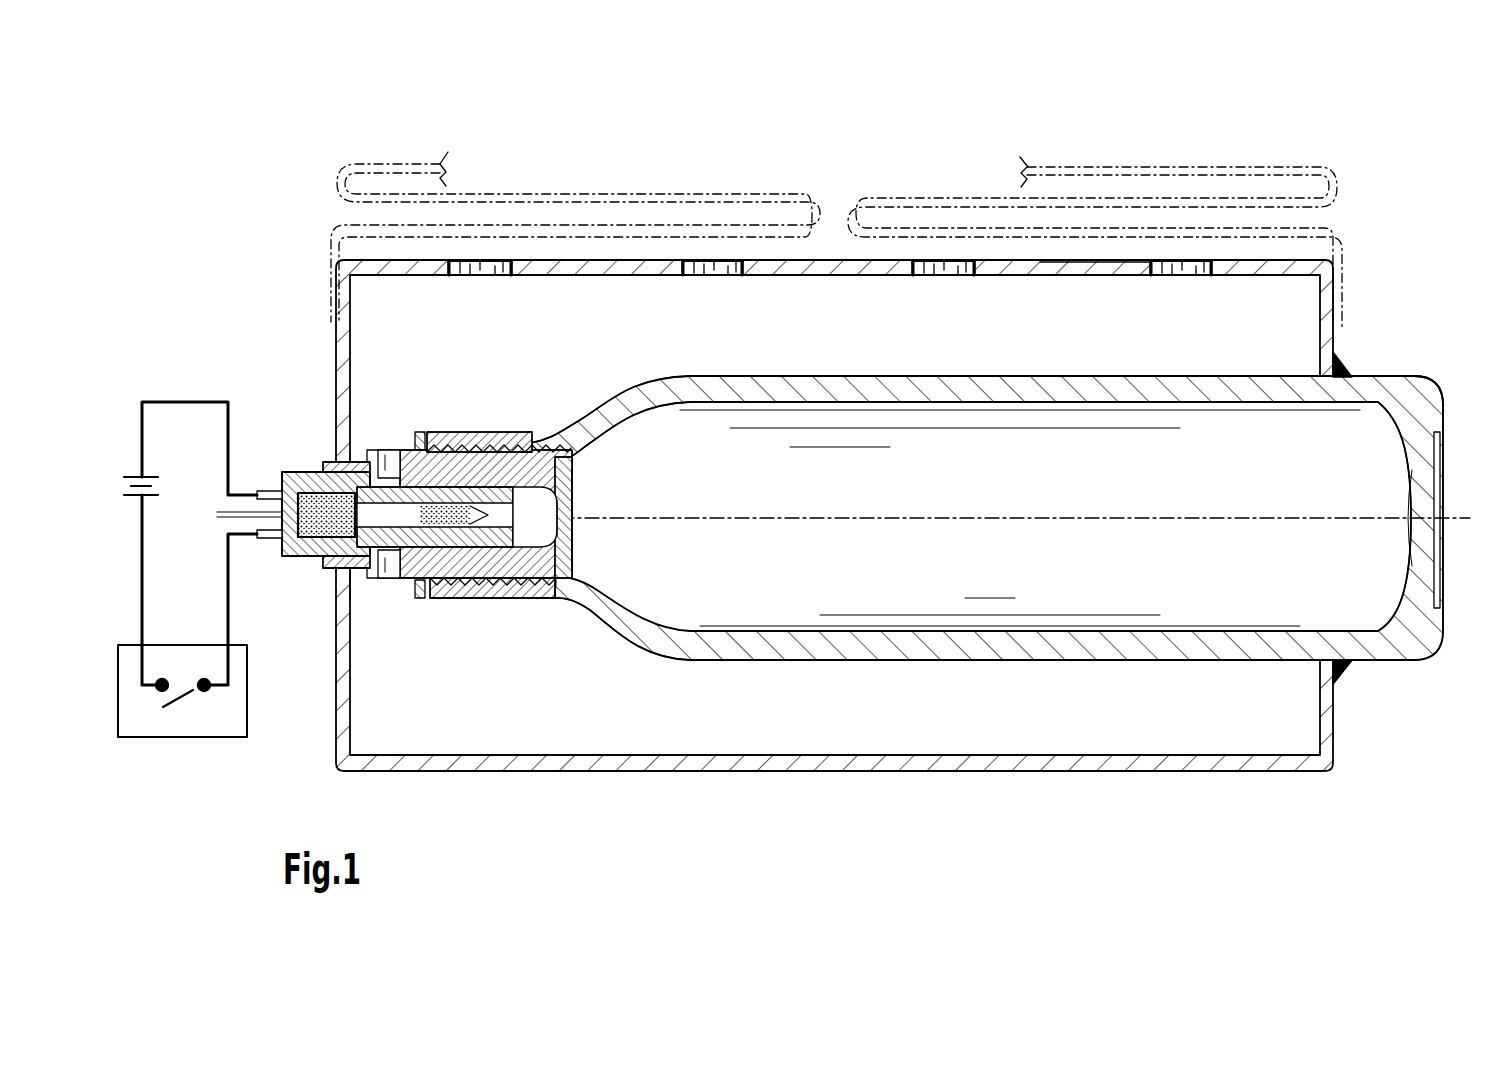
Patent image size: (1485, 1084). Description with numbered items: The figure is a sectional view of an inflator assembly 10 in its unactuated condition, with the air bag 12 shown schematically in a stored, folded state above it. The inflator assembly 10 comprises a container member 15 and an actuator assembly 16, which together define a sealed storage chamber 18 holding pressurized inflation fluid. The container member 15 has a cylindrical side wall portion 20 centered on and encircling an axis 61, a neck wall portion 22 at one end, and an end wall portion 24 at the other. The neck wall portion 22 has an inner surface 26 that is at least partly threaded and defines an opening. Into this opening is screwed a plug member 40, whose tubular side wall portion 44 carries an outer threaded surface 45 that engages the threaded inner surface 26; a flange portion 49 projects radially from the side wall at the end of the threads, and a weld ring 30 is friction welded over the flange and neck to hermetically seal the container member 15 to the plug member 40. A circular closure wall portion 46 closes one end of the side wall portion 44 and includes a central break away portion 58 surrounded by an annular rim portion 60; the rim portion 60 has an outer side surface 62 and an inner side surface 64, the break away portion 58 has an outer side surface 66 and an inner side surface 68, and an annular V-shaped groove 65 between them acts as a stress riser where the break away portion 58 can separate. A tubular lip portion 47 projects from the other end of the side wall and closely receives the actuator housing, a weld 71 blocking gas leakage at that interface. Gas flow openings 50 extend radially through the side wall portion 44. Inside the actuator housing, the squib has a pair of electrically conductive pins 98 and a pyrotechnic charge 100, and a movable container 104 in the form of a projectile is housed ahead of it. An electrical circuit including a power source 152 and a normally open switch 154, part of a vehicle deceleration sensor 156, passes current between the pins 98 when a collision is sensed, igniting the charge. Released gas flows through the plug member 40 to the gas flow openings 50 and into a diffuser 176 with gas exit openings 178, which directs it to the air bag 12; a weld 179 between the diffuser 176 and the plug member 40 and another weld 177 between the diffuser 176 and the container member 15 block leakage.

The inflator assembly 10 is at (318, 144).
The air bag 12 is at (1212, 164).
The container member 15 is at (1397, 322).
The actuator assembly 16 is at (310, 410).
The sealed storage chamber 18 is at (1340, 485).
The cylindrical side wall portion 20 is at (1168, 385).
The neck wall portion 22 is at (505, 435).
The end wall portion 24 is at (1421, 388).
The inner surface 26 is at (494, 440).
The weld ring 30 is at (420, 440).
The plug member 40 is at (477, 592).
The tubular side wall portion 44 is at (510, 582).
The outer threaded surface 45 is at (562, 585).
The closure wall portion 46 is at (572, 562).
The tubular lip portion 47 is at (357, 570).
The flange portion 49 is at (428, 426).
The gas flow openings 50 is at (388, 450).
The break away portion 58 is at (572, 508).
The rim portion 60 is at (590, 478).
The axis 61 is at (910, 508).
The outer side surface 62 is at (615, 446).
The inner side surface 64 is at (531, 458).
The V-shaped groove 65 is at (590, 490).
The outer side surface 66 is at (575, 527).
The inner side surface 68 is at (520, 585).
The weld 71 is at (342, 462).
The electrically conductive pins 98 is at (263, 493).
The pyrotechnic charge 100 is at (265, 517).
The movable container 104 is at (446, 582).
The power source 152 is at (127, 478).
The switch 154 is at (180, 697).
The vehicle deceleration sensor 156 is at (133, 737).
The diffuser 176 is at (1046, 268).
The weld 177 is at (1348, 664).
The gas exit openings 178 is at (938, 275).
The weld 179 is at (340, 574).